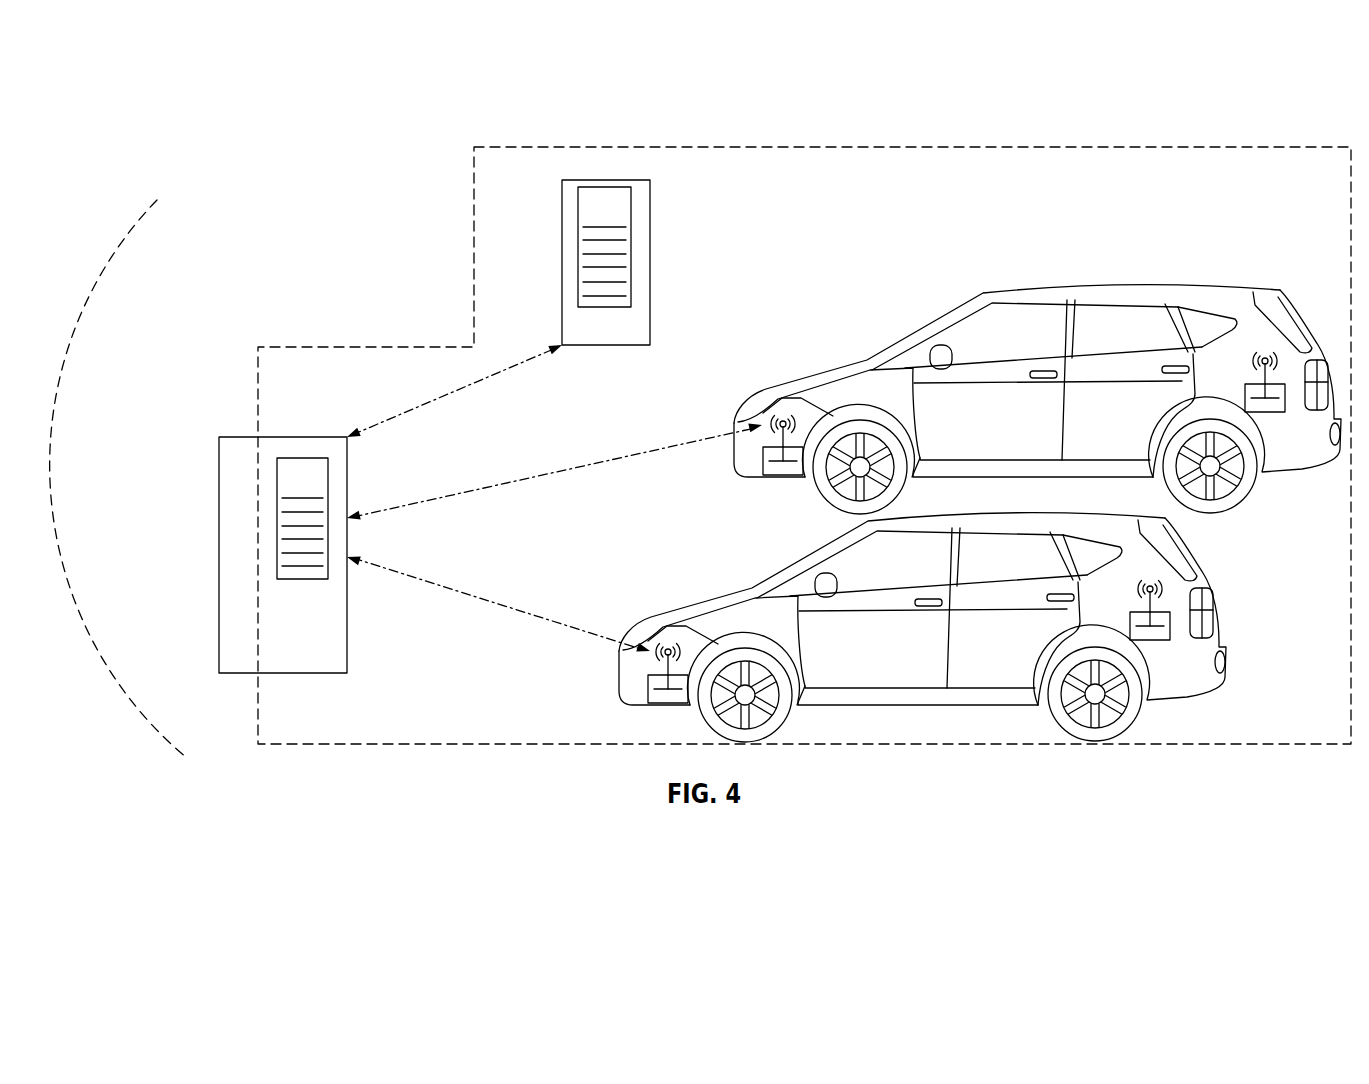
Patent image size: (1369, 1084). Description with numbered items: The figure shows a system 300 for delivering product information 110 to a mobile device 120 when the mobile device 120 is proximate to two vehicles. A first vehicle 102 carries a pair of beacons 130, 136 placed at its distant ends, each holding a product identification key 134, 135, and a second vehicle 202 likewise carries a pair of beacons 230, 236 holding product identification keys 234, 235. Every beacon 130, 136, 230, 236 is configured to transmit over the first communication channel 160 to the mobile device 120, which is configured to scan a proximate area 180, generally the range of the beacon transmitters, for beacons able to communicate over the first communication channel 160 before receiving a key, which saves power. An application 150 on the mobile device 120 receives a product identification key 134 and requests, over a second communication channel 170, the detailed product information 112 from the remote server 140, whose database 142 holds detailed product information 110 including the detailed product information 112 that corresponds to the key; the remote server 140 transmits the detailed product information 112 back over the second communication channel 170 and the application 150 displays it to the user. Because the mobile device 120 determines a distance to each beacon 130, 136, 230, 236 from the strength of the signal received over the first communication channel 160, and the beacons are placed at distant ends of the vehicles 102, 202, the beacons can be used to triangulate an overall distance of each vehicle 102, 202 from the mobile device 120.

The system for delivering product information 300 is at (287, 141).
The proximate area 180 is at (209, 293).
The product information 110 is at (600, 224).
The remote server 140 is at (650, 223).
The database 142 is at (631, 290).
The detailed product information 112 is at (302, 479).
The mobile device 120 is at (219, 485).
The application 150 is at (300, 582).
The second communication channel 170 is at (452, 391).
The first communication channel 160 is at (453, 589).
The second vehicle 202 is at (1115, 287).
The first vehicle 102 is at (997, 515).
The beacon 230 is at (762, 455).
The product identification key 234 is at (775, 477).
The beacon 236 is at (1244, 397).
The product identification key 235 is at (1266, 413).
The beacon 130 is at (648, 683).
The product identification key 134 is at (660, 704).
The beacon 136 is at (1172, 628).
The product identification key 135 is at (1152, 642).